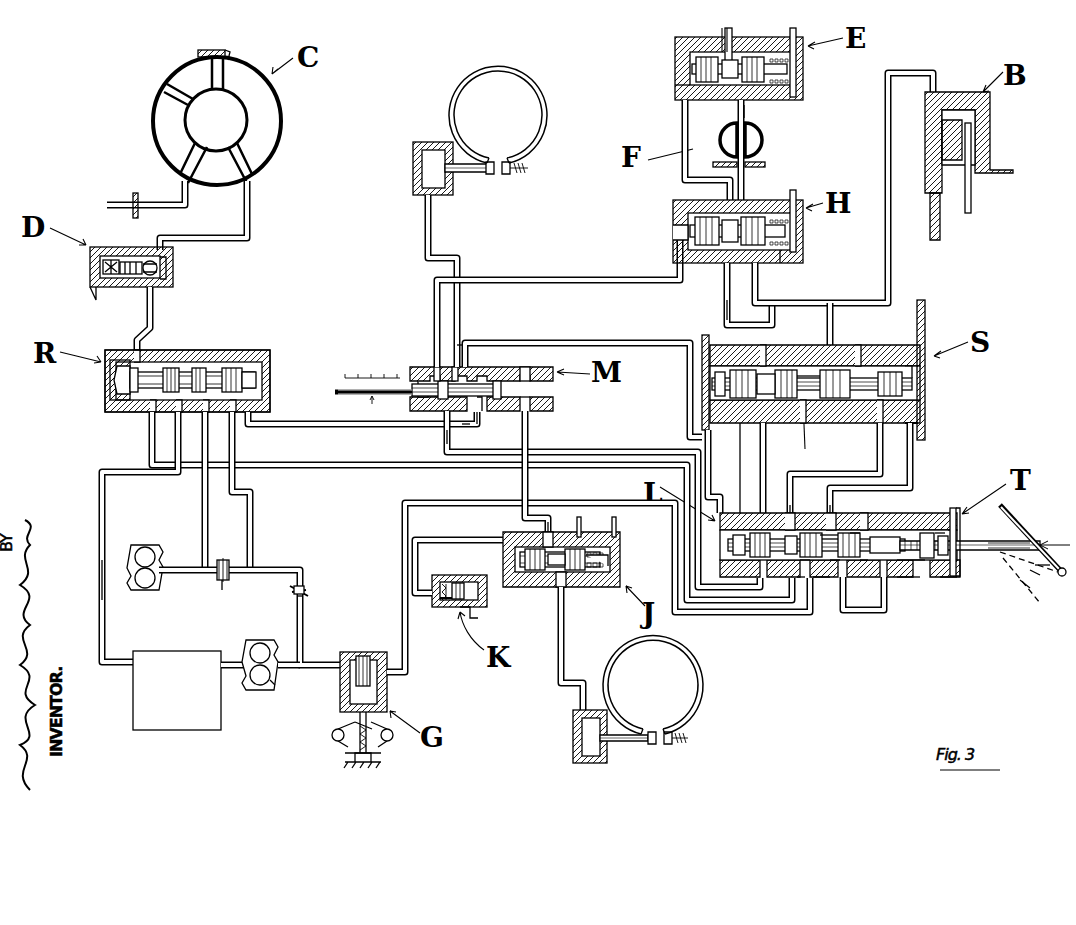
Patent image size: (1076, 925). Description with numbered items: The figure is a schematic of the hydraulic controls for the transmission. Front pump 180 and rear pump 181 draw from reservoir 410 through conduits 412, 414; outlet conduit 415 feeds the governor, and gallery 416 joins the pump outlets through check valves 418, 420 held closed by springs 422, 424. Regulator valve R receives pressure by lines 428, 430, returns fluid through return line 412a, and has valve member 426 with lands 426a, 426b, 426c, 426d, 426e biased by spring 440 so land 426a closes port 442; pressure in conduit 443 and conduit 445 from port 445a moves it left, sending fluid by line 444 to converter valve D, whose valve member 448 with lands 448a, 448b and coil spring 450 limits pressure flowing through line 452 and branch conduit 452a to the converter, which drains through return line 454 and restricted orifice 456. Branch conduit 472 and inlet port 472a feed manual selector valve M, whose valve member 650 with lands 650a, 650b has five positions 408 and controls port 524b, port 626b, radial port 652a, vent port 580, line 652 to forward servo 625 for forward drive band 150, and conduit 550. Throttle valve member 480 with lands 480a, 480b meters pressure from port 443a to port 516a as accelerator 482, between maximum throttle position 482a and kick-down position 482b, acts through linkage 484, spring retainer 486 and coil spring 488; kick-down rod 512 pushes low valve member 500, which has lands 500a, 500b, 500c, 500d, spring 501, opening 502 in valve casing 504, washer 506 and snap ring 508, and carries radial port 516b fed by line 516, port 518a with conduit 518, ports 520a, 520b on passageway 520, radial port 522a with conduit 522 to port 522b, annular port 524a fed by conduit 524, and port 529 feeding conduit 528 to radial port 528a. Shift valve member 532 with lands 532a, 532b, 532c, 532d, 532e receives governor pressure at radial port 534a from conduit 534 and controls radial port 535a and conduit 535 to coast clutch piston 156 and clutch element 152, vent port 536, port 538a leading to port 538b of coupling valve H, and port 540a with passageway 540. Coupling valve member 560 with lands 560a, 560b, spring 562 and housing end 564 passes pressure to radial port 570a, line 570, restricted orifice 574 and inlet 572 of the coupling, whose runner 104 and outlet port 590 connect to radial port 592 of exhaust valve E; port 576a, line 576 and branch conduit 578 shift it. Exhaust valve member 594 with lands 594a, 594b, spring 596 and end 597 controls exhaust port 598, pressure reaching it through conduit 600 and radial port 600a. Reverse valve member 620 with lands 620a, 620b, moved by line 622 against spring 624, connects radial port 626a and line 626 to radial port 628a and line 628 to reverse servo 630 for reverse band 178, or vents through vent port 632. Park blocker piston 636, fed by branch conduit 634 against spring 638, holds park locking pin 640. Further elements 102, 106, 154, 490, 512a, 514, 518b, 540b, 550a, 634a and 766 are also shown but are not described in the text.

The actuating rod 102 is at (760, 492).
The engine driven runner 104 is at (730, 146).
The relay R2 106 is at (760, 146).
The forward drive band 150 is at (450, 108).
The clutch element 152 is at (972, 180).
The housing 154 is at (959, 166).
The coast clutch piston 156 is at (942, 160).
The reverse band 178 is at (606, 668).
The front pump 180 is at (143, 546).
The rear pump 181 is at (252, 688).
The selector positions 408 is at (337, 398).
The hydraulic fluid reservoir 410 is at (150, 652).
The conduit 412 is at (105, 601).
The return line 412a is at (106, 504).
The conduit 414 is at (228, 655).
The outlet conduit 415 is at (275, 683).
The fluid gallery 416 is at (195, 573).
The check valve 418 is at (222, 584).
The check valve 420 is at (298, 598).
The spring 422 is at (236, 552).
The spring 424 is at (292, 589).
The valve member 426 is at (150, 402).
The land 426a is at (130, 392).
The land 426b is at (171, 366).
The land 426c is at (200, 366).
The land 426d is at (235, 366).
The right hand land 426e is at (252, 374).
The line 428 is at (202, 507).
The line 430 is at (254, 505).
The spring 440 is at (112, 380).
The port 442 is at (185, 379).
The conduit 443 is at (148, 445).
The port 443a is at (952, 578).
The line 444 is at (147, 315).
The conduit 445 is at (312, 428).
The port 445a is at (501, 429).
The valve member 448 is at (150, 284).
The right hand land 448a is at (136, 258).
The left hand land 448b is at (160, 280).
The coil spring 450 is at (138, 265).
The line 452 is at (243, 226).
The branch conduit 452a is at (172, 257).
The return line 454 is at (181, 192).
The restricted orifice 456 is at (132, 200).
The branch conduit 472 is at (470, 430).
The pump pressure inlet port 472a is at (480, 410).
The throttle valve member 480 is at (925, 552).
The land 480a is at (945, 555).
The land 480b is at (928, 556).
The engine accelerator 482 is at (1030, 530).
The maximum throttle position 482a is at (1036, 578).
The kick-down position 482b is at (1025, 590).
The linkage 484 is at (1040, 568).
The spring retainer 486 is at (960, 565).
The coil spring 488 is at (963, 570).
The spring 490 is at (940, 556).
The low valve member 500 is at (895, 642).
The land 500a is at (886, 560).
The land 500b is at (908, 570).
The land 500c is at (805, 562).
The land 500d is at (825, 560).
The coil spring 501 is at (832, 572).
The opening 502 is at (740, 558).
The valve casing 504 is at (752, 560).
The washer 506 is at (762, 565).
The snap ring 508 is at (775, 560).
The kick-down rod 512 is at (1000, 553).
The port 512a is at (878, 560).
The land 514 is at (870, 556).
The line 516 is at (958, 540).
The port 516a is at (950, 560).
The radial port 516b is at (902, 560).
The conduit 518 is at (914, 484).
The port 518a is at (833, 511).
The port 518b is at (920, 421).
The passageway 520 is at (829, 591).
The port 520a is at (815, 570).
The port 520b is at (915, 575).
The conduit 522 is at (846, 476).
The radial port 522a is at (793, 508).
The radial port 522b is at (931, 407).
The conduit 524 is at (636, 448).
The annular port 524a is at (812, 580).
The port 524b is at (444, 436).
The conduit 528 is at (778, 468).
The radial port 528a is at (768, 400).
The port 529 is at (730, 471).
The valve member 532 is at (813, 381).
The right hand land 532a is at (905, 382).
The land 532b is at (838, 400).
The land 532c is at (790, 400).
The land 532d is at (742, 400).
The left hand land 532e is at (714, 386).
The conduit 534 is at (402, 513).
The radial port 534a is at (702, 412).
The conduit 535 is at (892, 254).
The radial port 535a is at (780, 352).
The vent port 536 is at (723, 312).
The port 538a is at (834, 328).
The port 538b is at (723, 280).
The passageway 540 is at (927, 320).
The port 540a is at (863, 350).
The port 540b is at (915, 366).
The conduit 550 is at (594, 342).
The port 550a is at (808, 422).
The valve member 560 is at (749, 241).
The left hand land 560a is at (700, 216).
The right hand land 560b is at (790, 255).
The coil spring 562 is at (800, 222).
The end of valve housing 564 is at (795, 246).
The line 570 is at (754, 200).
The radial port 570a is at (740, 212).
The inlet 572 is at (714, 167).
The restricted orifice 574 is at (766, 166).
The line 576 is at (474, 280).
The port 576a is at (434, 375).
The branch conduit 578 is at (685, 260).
The vent port 580 is at (418, 412).
The outlet port 590 is at (738, 124).
The radial port 592 is at (748, 110).
The valve member 594 is at (736, 69).
The left hand land 594a is at (698, 60).
The right hand land 594b is at (756, 84).
The coil spring 596 is at (798, 60).
The end of exhaust valve 597 is at (790, 80).
The exhaust port 598 is at (722, 32).
The conduit 600 is at (684, 115).
The radial port 600a is at (682, 90).
The valve member 620 is at (583, 563).
The land 620a is at (533, 572).
The land 620b is at (578, 575).
The line 622 is at (450, 540).
The coil spring 624 is at (606, 558).
The forward servo 625 is at (412, 156).
The line 626 is at (522, 492).
The radial port 626a is at (545, 528).
The port 626b is at (527, 412).
The line 628 is at (558, 680).
The radial port 628a is at (560, 580).
The reverse servo 630 is at (578, 764).
The vent port 632 is at (580, 528).
The branch conduit 634 is at (431, 590).
The port 634a is at (612, 566).
The piston 636 is at (446, 582).
The coil spring 638 is at (448, 604).
The park locking pin 640 is at (460, 582).
The valve member 650 is at (470, 378).
The land 650a is at (452, 372).
The land 650b is at (522, 368).
The line 652 is at (431, 226).
The radial port 652a is at (464, 341).
The land 766 is at (690, 68).